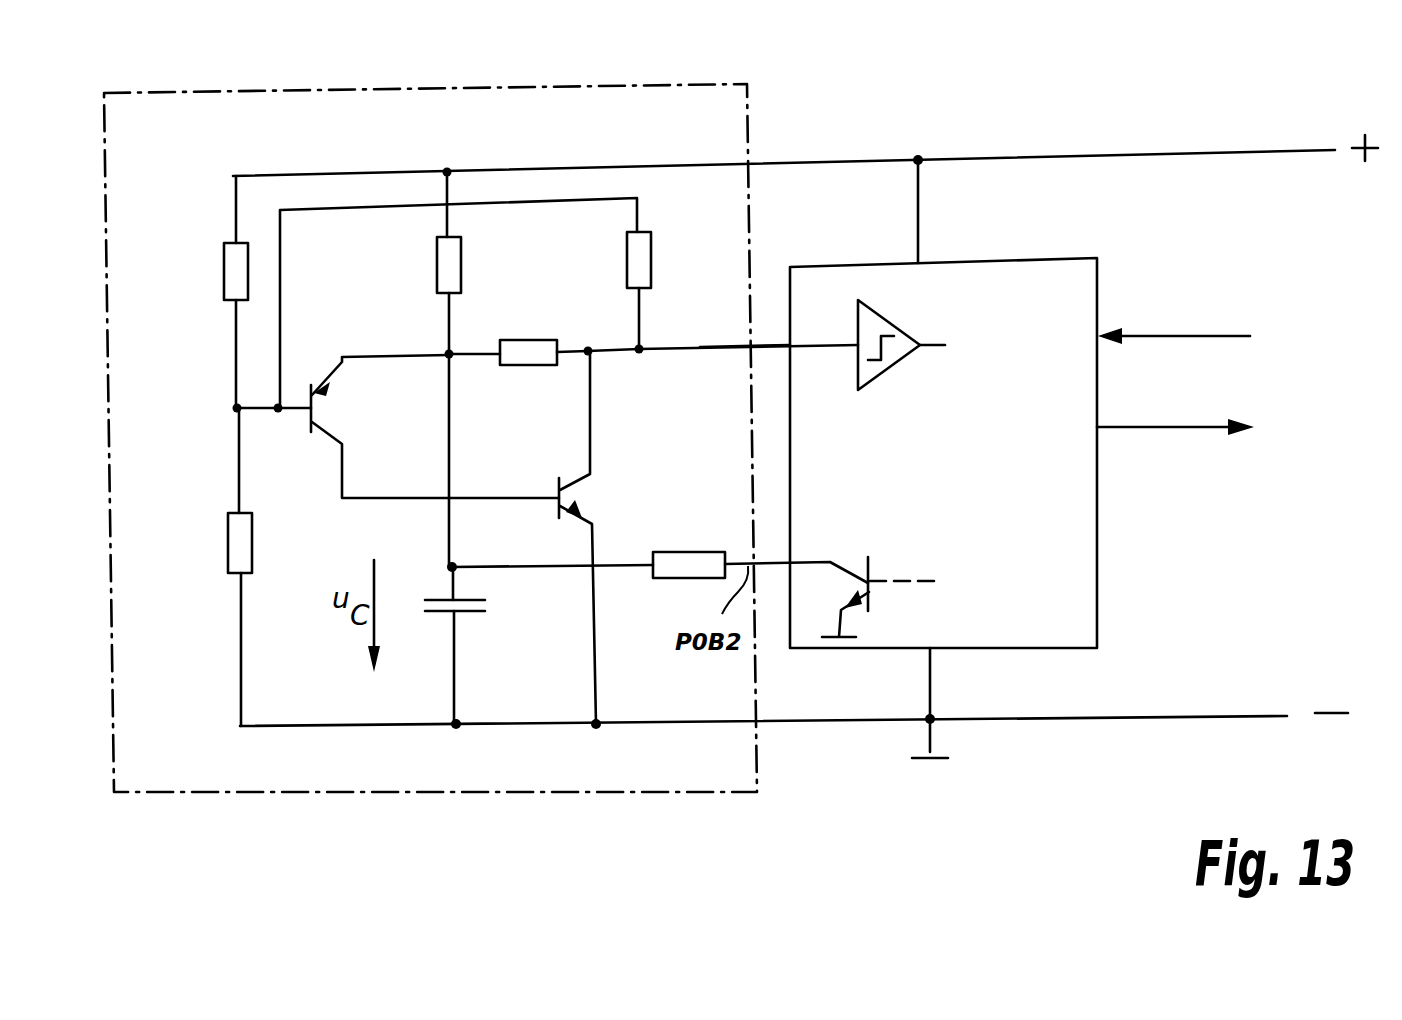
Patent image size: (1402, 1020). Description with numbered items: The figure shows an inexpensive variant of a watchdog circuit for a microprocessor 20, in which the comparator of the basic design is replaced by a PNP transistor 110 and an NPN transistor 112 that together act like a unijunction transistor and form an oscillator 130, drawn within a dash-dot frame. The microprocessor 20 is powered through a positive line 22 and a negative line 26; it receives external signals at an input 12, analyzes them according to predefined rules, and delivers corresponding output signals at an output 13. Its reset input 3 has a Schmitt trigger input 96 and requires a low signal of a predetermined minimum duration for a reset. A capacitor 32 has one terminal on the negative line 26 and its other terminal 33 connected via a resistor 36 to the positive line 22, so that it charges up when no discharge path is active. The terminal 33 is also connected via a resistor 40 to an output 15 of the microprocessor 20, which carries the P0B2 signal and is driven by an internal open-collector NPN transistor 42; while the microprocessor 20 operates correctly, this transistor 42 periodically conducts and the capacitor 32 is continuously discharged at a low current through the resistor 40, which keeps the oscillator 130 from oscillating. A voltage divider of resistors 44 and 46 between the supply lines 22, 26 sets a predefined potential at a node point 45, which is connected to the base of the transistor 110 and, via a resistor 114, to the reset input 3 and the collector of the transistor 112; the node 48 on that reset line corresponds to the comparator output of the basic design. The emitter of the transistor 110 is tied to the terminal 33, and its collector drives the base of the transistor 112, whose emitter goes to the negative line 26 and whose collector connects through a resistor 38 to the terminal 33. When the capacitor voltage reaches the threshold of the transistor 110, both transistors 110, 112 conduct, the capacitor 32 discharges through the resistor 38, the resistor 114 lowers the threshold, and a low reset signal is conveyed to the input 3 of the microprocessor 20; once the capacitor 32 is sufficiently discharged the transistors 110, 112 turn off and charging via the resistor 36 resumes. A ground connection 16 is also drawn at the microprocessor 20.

The oscillator 130 is at (428, 88).
The positive line 22 is at (1015, 160).
The negative line 26 is at (1130, 718).
The microprocessor 20 is at (1040, 268).
The Schmitt trigger input 96 is at (872, 312).
The input 12 is at (1214, 336).
The output 13 is at (1200, 428).
The resistor 44 is at (236, 282).
The resistor 46 is at (240, 572).
The node point 45 is at (237, 410).
The resistor 36 is at (448, 265).
The resistor 114 is at (636, 258).
The resistor 38 is at (516, 356).
The output 48 is at (641, 352).
The reset input 3 is at (730, 348).
The PNP transistor 110 is at (330, 408).
The NPN transistor 112 is at (570, 488).
The terminal 33 is at (450, 566).
The capacitor 32 is at (490, 604).
The resistor 40 is at (680, 566).
The output 15 is at (770, 560).
The open-collector NPN transistor 42 is at (852, 562).
The ground connection 16 is at (932, 692).